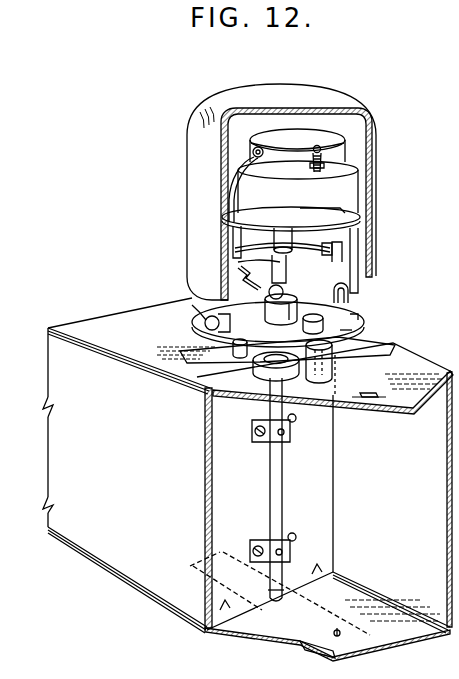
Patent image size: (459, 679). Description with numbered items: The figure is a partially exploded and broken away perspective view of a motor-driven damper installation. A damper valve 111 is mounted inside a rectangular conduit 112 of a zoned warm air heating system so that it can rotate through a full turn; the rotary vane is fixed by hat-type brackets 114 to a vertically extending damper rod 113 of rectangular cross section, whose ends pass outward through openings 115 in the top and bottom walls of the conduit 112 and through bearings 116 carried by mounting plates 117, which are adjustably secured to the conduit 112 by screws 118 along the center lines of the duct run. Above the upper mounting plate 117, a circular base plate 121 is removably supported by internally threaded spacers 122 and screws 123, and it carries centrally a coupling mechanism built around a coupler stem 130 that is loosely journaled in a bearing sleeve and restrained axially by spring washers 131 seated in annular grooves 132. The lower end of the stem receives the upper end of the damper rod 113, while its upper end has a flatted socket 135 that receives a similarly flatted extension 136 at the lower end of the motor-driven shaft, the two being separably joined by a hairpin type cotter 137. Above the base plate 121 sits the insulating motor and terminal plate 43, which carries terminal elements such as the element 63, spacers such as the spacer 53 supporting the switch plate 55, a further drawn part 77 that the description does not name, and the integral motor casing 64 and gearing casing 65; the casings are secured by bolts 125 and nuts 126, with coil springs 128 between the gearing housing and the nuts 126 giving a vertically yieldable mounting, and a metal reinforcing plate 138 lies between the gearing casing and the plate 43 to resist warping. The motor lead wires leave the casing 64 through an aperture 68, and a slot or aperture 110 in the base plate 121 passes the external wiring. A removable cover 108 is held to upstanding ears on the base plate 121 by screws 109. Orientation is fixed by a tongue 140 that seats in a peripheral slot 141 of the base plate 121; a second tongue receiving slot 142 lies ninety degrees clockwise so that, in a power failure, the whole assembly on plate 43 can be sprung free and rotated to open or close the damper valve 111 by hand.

The cover 108 is at (187, 142).
The motor casing 64 is at (283, 128).
The gearing casing 65 is at (298, 187).
The aperture 68 is at (256, 148).
The bolts 125 is at (317, 146).
The nuts 126 is at (322, 151).
The coil springs 128 is at (325, 163).
The motor and terminal plate 43 is at (353, 220).
The reinforcing plate 138 is at (352, 207).
The spacer 53 is at (284, 232).
The electrical terminal element 63 is at (240, 246).
The hairpin type cotter 137 is at (250, 266).
The switch plate 55 is at (323, 248).
The wire 77 is at (253, 274).
The flatted cylindrical extension 136 is at (283, 276).
The socket 135 is at (281, 290).
The slot or aperture 110 is at (297, 300).
The spring washers 131 is at (327, 320).
The tongue 140 is at (356, 297).
The slot 141 is at (354, 318).
The screws 123 is at (347, 330).
The second tongue receiving slot 142 is at (330, 341).
The spacers 122 is at (313, 367).
The coupler stem 130 is at (213, 303).
The circular base plate 121 is at (200, 312).
The screws 109 is at (205, 326).
The annular grooves 132 is at (249, 339).
The bearings 116 is at (177, 382).
The conduit 112 is at (127, 465).
The mounting plates 117 is at (387, 383).
The screws 118 is at (397, 398).
The damper valve 111 is at (333, 477).
The damper rod 113 is at (283, 498).
The hat-type brackets 114 is at (283, 437).
The openings 115 is at (285, 598).